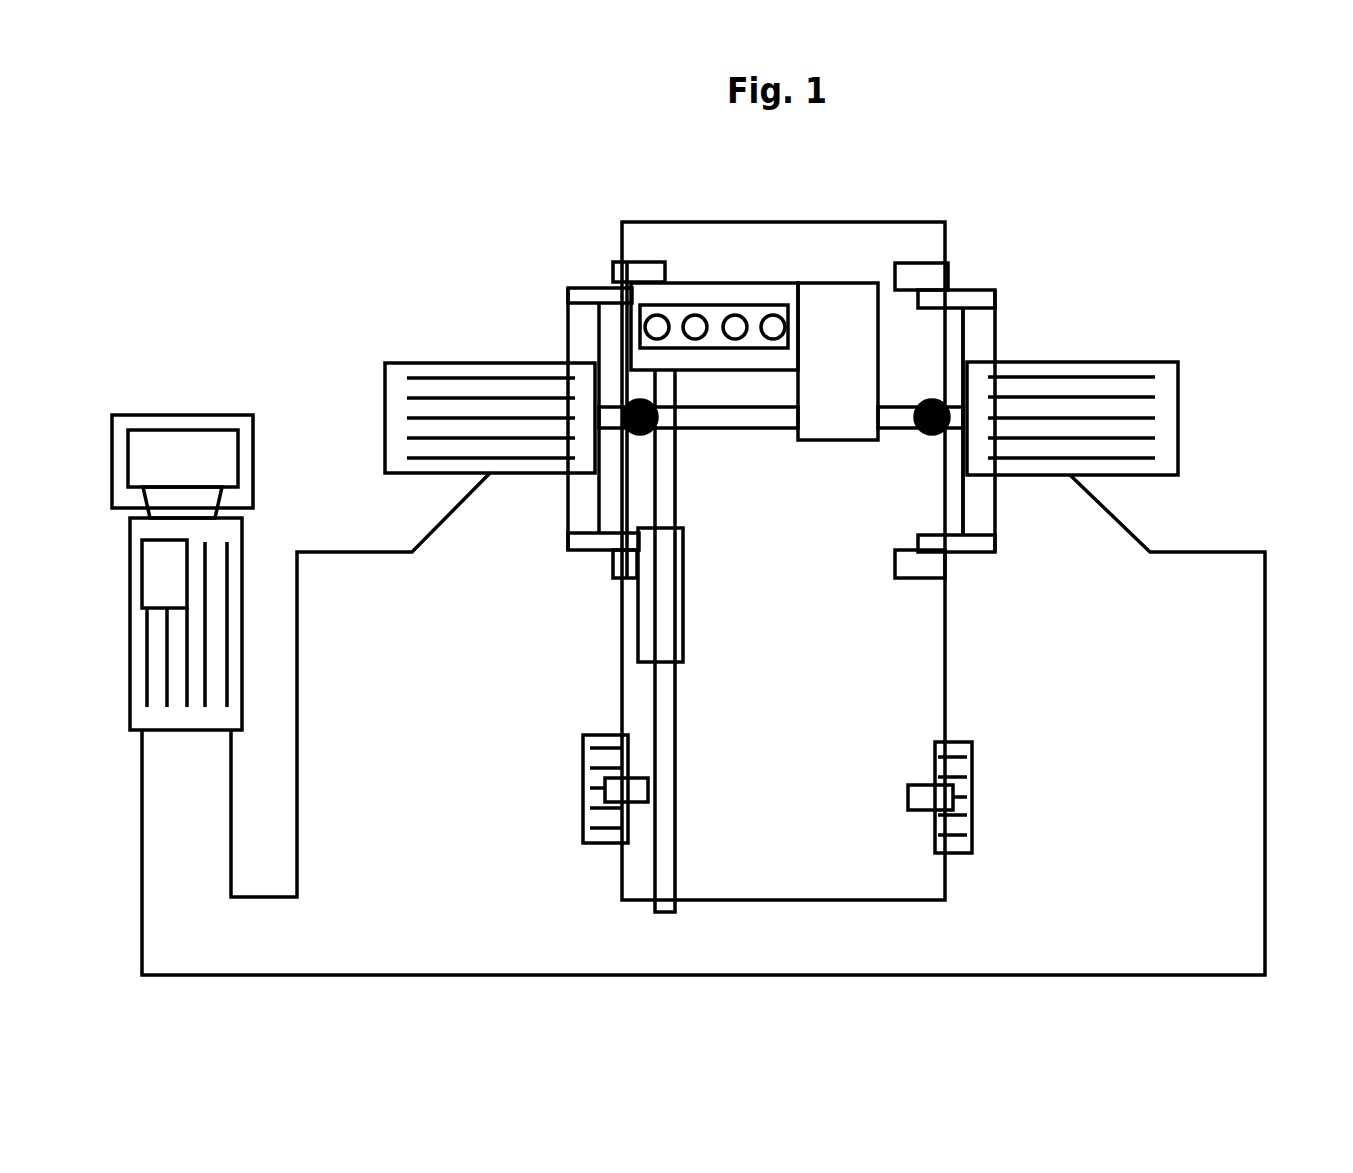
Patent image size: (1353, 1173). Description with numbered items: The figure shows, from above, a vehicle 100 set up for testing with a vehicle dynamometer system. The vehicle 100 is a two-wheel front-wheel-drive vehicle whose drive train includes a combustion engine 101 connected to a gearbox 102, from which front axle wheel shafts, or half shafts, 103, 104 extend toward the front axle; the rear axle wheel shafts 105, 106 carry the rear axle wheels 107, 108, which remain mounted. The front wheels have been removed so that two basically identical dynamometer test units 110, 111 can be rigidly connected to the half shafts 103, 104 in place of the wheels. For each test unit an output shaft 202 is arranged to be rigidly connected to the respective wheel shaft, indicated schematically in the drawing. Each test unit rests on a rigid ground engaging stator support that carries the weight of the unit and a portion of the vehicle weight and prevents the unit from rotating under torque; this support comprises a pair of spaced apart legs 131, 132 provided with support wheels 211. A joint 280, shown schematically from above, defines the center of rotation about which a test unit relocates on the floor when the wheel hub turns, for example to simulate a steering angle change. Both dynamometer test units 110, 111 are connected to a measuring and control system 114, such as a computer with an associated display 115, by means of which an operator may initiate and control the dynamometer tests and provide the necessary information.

The vehicle 100 is at (876, 228).
The combustion engine 101 is at (690, 292).
The gearbox 102 is at (838, 291).
The front axle wheel shaft 103 is at (735, 420).
The front axle wheel shaft 104 is at (898, 430).
The rear axle wheel shaft 105 is at (648, 790).
The rear axle wheel shaft 106 is at (910, 800).
The rear axle wheel 107 is at (590, 755).
The rear axle wheel 108 is at (957, 762).
The dynamometer test unit 110 is at (463, 373).
The dynamometer test unit 111 is at (1168, 418).
The measuring and control system 114 is at (232, 565).
The display 115 is at (218, 441).
The leg 131 is at (984, 300).
The leg 132 is at (975, 545).
The output shaft 202 is at (978, 386).
The support wheel 211 is at (606, 272).
The joint 280 is at (633, 428).